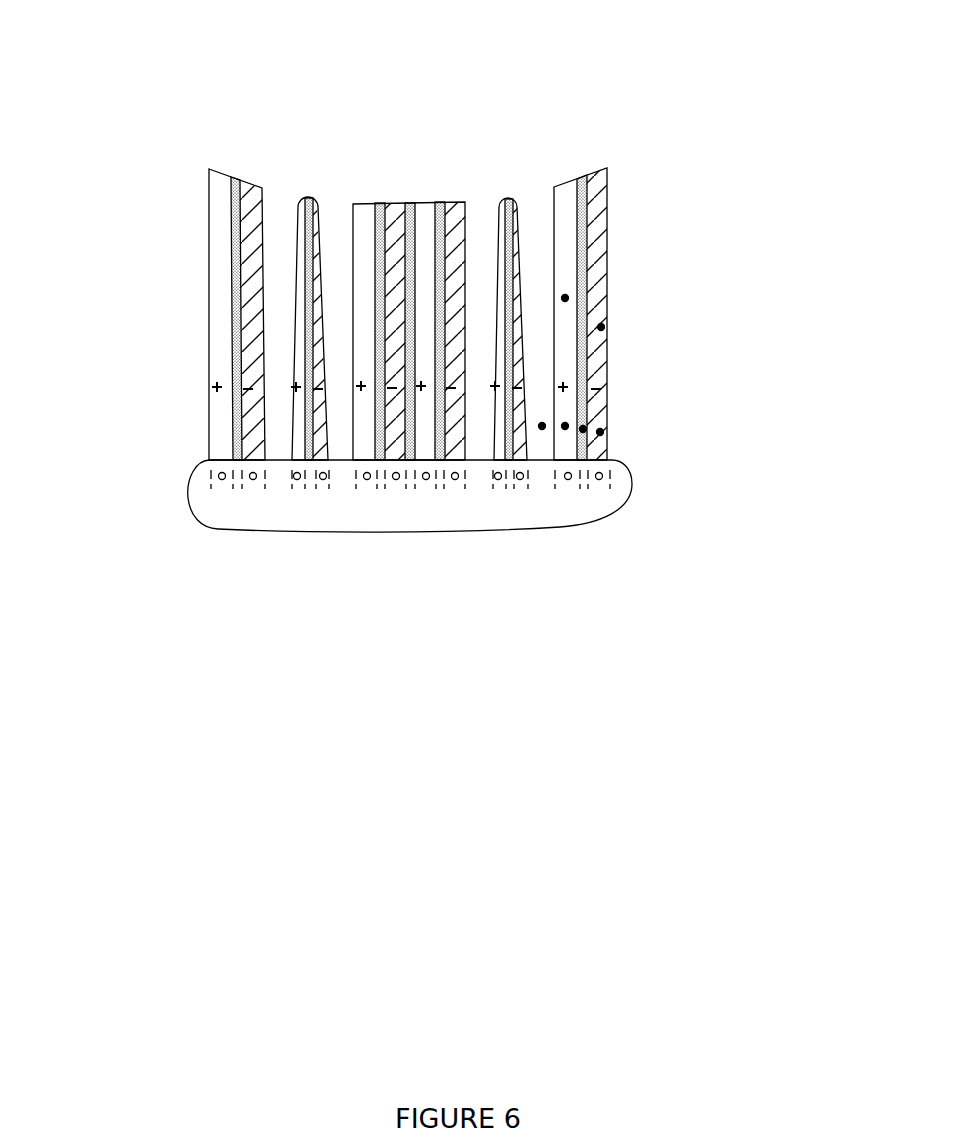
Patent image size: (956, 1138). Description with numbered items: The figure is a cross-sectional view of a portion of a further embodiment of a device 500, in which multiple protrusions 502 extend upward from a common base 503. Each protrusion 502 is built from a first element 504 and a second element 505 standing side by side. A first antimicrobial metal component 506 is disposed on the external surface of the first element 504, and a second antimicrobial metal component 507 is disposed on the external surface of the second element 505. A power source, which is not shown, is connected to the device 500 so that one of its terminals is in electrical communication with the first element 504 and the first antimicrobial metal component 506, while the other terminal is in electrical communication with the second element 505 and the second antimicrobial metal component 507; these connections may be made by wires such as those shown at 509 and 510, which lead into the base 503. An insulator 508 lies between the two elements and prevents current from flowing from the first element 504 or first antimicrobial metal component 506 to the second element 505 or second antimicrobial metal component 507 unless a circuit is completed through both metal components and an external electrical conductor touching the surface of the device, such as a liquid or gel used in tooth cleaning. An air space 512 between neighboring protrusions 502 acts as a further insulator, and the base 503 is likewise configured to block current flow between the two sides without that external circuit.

The device 500 is at (434, 511).
The protrusions 502 is at (423, 203).
The base 503 is at (192, 500).
The first element 504 is at (565, 426).
The second element 505 is at (600, 432).
The first antimicrobial metal component 506 is at (565, 298).
The second antimicrobial metal component 507 is at (601, 327).
The insulator 508 is at (583, 429).
The wire 509 is at (569, 482).
The wire 510 is at (604, 480).
The air space 512 is at (542, 426).